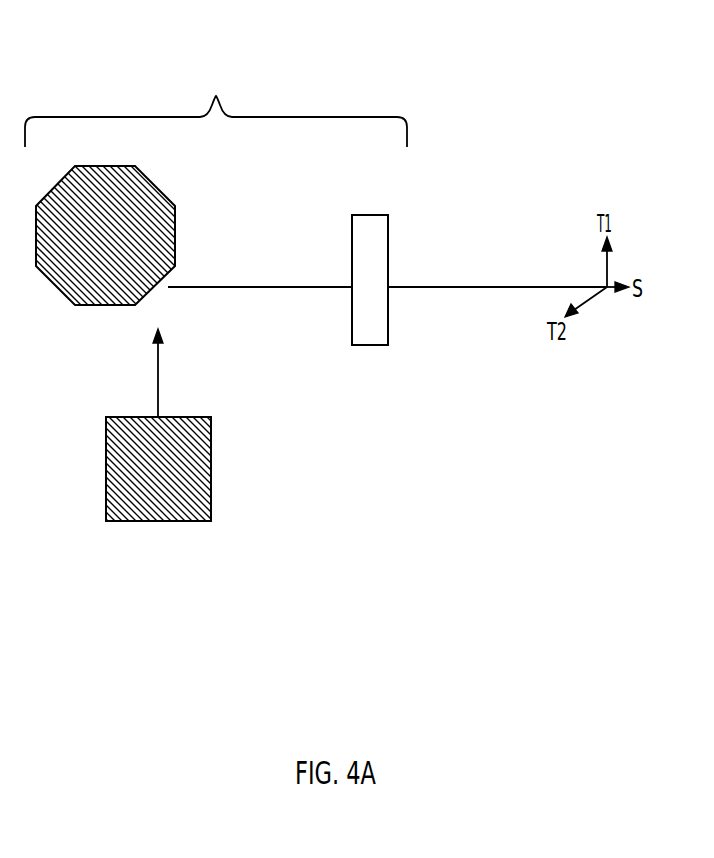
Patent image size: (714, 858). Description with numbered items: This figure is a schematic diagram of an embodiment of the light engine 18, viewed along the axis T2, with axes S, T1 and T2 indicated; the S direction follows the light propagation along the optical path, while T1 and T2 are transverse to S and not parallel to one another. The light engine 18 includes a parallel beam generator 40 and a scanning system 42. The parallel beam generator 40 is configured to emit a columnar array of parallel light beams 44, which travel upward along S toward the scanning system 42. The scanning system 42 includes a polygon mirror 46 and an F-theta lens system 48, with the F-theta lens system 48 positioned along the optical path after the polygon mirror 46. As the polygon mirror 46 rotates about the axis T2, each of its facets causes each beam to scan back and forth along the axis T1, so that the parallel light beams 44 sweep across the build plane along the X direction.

The light engine 18 is at (373, 74).
The parallel beam generator 40 is at (211, 471).
The scanning system 42 is at (216, 107).
The parallel light beams 44 is at (158, 370).
The polygon mirror 46 is at (158, 189).
The F-theta lens system 48 is at (388, 238).